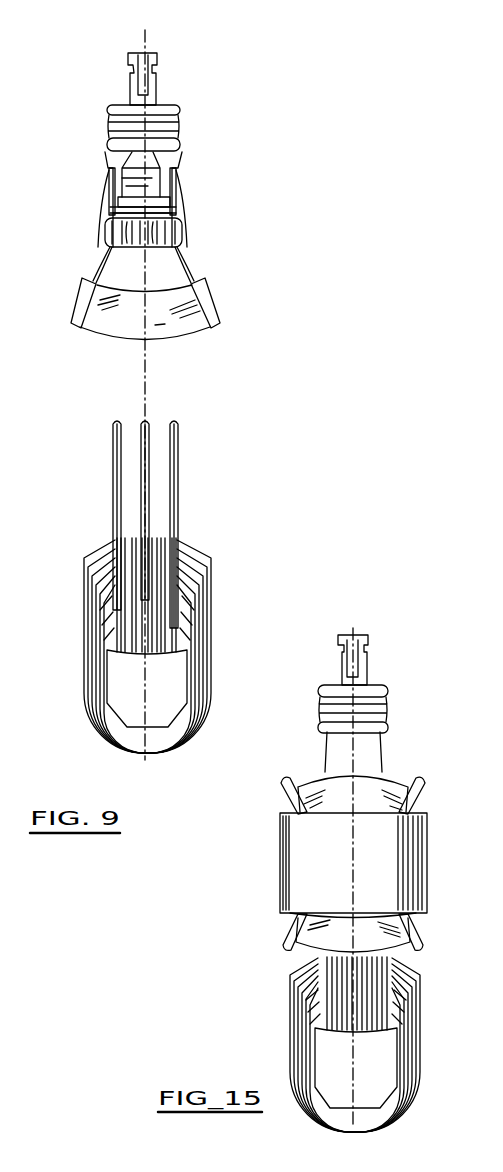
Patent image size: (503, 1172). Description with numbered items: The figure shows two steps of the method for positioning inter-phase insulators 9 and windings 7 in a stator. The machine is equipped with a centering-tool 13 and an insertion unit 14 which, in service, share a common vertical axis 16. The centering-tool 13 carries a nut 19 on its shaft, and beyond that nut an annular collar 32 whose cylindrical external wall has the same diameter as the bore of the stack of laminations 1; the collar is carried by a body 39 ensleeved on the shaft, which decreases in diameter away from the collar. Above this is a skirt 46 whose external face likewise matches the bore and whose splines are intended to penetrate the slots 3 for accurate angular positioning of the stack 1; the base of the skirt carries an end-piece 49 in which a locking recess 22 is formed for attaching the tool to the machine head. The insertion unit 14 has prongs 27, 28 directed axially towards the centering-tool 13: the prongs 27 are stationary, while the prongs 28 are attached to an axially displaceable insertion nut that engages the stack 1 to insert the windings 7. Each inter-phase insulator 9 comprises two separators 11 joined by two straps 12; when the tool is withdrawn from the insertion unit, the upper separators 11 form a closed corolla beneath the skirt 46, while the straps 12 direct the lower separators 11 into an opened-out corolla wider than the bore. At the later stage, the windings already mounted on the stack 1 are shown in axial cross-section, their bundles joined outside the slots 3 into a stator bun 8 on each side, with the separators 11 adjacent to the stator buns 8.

In FIG. 15, the stack of sheet-iron stator laminations 1 is at (408, 868).
In FIG. 15, the slots 3 is at (312, 755).
In FIG. 15, the windings 7 is at (433, 1108).
In FIG. 15, the stator bun 8 is at (283, 788).
In FIG. 9, the inter-phase insulators 9 is at (72, 327).
In FIG. 9, the separators 11 is at (80, 298).
In FIG. 15, the separators 11 is at (373, 783).
In FIG. 9, the straps 12 is at (178, 190).
In FIG. 9, the centering-tool 13 is at (200, 133).
In FIG. 9, the insertion unit 14 is at (195, 510).
In FIG. 9, the vertical axis 16 is at (145, 373).
In FIG. 9, the nut 19 is at (195, 232).
In FIG. 15, the locking recess 22 is at (368, 656).
In FIG. 9, the prongs 27 is at (180, 458).
In FIG. 9, the prongs 28 is at (168, 556).
In FIG. 15, the prongs 28 is at (358, 1012).
In FIG. 9, the annular collar 32 is at (195, 208).
In FIG. 9, the body 39 is at (148, 180).
In FIG. 9, the skirt 46 is at (118, 130).
In FIG. 15, the skirt 46 is at (387, 708).
In FIG. 9, the end-piece 49 is at (130, 92).